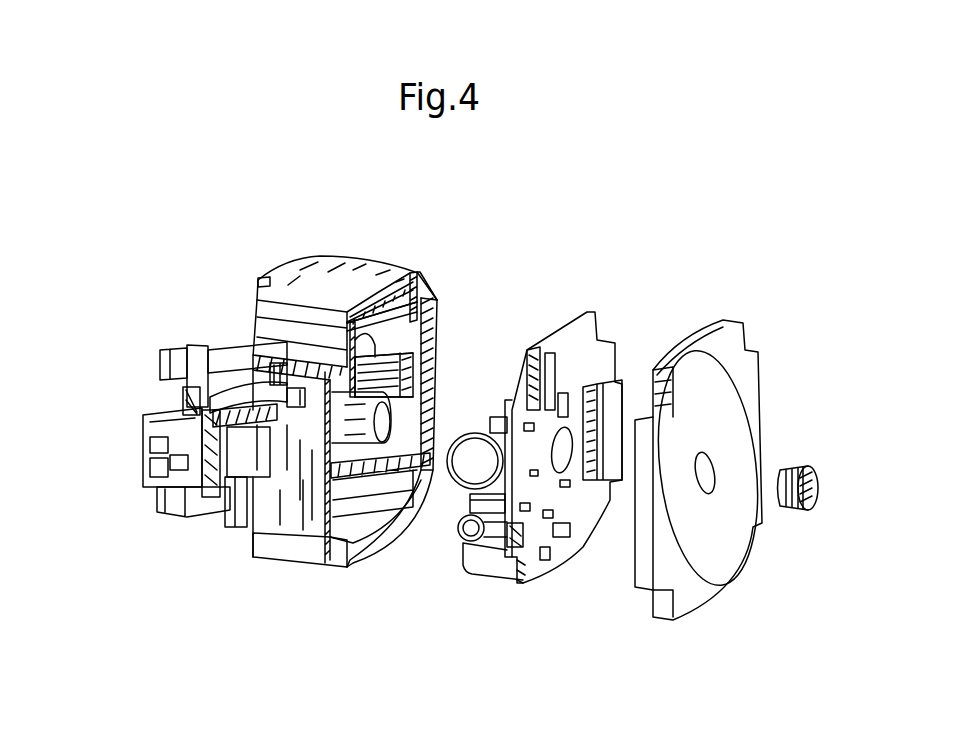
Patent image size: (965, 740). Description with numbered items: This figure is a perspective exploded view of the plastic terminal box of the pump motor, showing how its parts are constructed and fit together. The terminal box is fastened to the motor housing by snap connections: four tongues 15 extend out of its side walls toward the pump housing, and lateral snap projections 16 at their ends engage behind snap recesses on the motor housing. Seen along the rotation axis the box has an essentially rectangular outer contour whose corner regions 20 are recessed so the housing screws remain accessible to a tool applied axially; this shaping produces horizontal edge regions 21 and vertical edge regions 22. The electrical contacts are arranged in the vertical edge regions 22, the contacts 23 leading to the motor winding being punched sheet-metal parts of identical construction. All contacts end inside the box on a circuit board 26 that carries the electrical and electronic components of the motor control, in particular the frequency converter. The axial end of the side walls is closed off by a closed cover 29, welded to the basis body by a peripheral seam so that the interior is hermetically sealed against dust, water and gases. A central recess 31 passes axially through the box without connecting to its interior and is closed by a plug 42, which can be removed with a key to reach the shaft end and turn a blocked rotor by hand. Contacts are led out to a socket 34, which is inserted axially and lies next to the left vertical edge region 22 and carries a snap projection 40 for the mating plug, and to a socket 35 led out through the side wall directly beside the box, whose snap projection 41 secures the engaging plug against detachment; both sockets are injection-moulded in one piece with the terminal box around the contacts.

The tongues 15 is at (181, 356).
The lateral snap projections 16 is at (162, 358).
The corner regions 20 is at (305, 330).
The horizontal edge regions 21 is at (431, 283).
The vertical edge regions 22 is at (444, 310).
The contacts leading to the motor winding 23 is at (444, 346).
The circuit board 26 is at (557, 577).
The cover 29 is at (755, 380).
The central recess 31 is at (444, 388).
The socket 34 is at (218, 527).
The socket 35 is at (143, 418).
The snap projection 40 is at (145, 490).
The snap projection 41 is at (183, 397).
The plug 42 is at (817, 500).